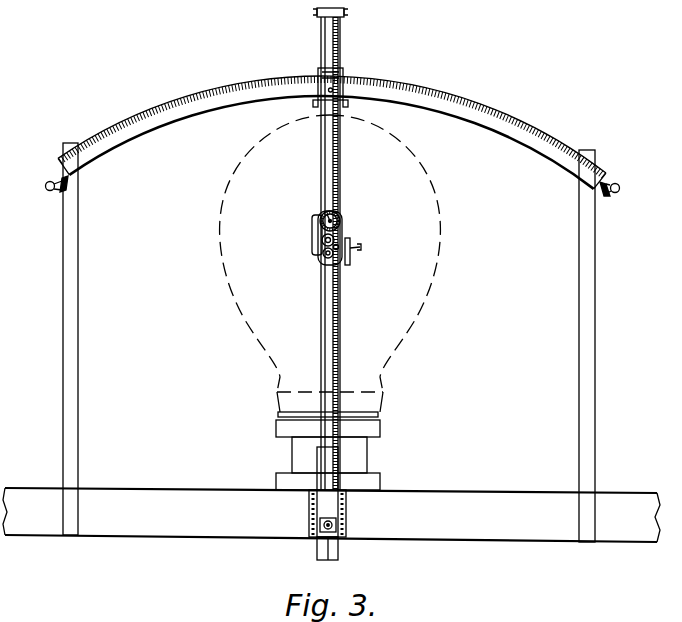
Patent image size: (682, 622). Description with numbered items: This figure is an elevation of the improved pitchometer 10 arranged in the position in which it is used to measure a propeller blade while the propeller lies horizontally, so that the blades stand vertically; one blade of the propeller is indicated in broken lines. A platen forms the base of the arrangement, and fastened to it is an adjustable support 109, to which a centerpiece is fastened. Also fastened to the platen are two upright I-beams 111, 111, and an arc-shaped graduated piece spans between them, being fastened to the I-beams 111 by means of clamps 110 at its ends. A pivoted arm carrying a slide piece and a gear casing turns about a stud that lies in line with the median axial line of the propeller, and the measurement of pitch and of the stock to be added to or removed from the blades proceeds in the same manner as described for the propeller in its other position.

The pitchometer 10 is at (345, 238).
The adjustable support 109 is at (335, 551).
The clamps 110 is at (46, 184).
The upright I-beams 111 is at (73, 358).